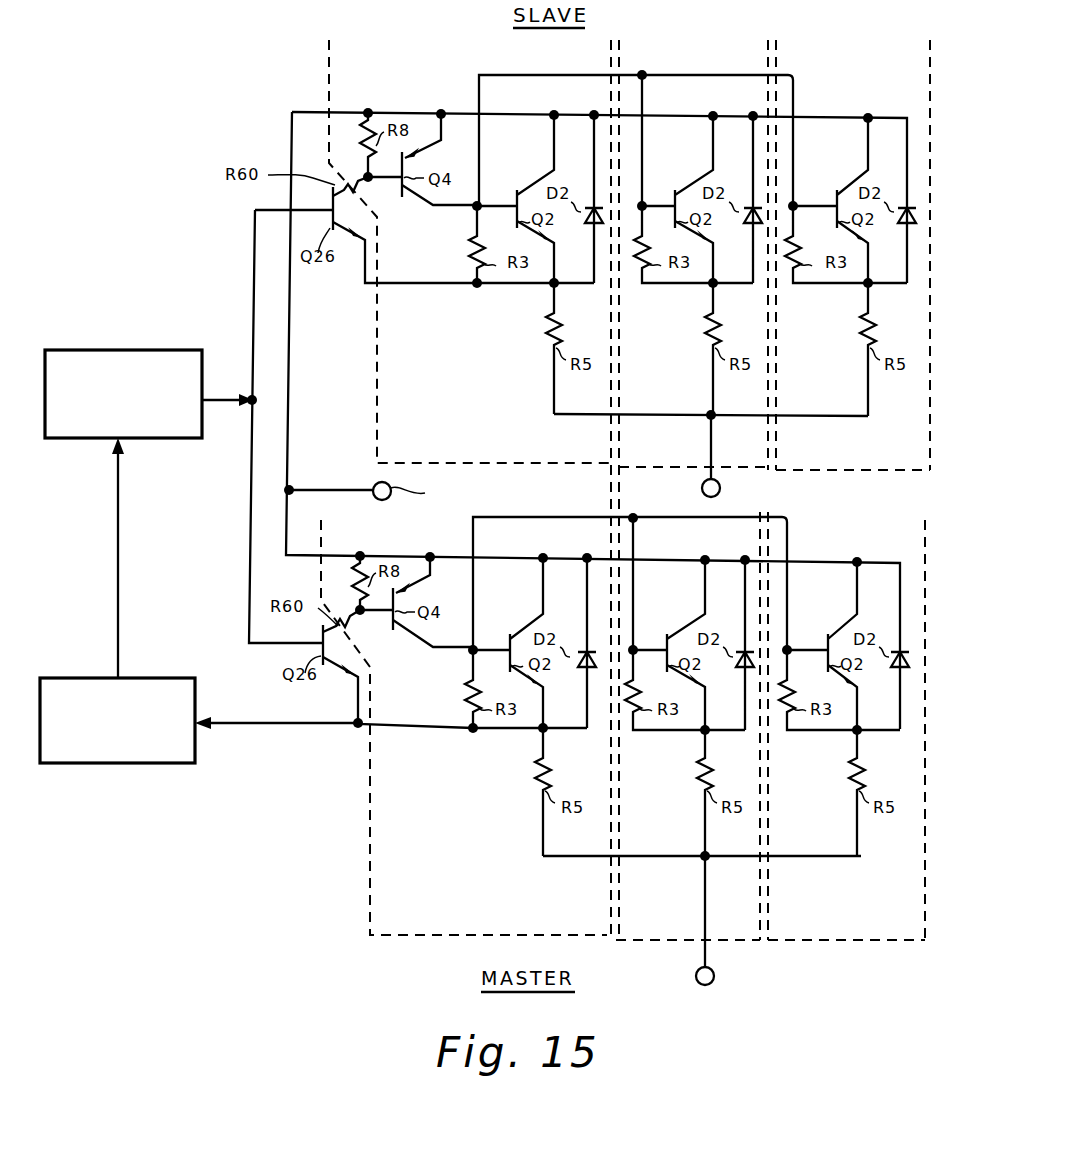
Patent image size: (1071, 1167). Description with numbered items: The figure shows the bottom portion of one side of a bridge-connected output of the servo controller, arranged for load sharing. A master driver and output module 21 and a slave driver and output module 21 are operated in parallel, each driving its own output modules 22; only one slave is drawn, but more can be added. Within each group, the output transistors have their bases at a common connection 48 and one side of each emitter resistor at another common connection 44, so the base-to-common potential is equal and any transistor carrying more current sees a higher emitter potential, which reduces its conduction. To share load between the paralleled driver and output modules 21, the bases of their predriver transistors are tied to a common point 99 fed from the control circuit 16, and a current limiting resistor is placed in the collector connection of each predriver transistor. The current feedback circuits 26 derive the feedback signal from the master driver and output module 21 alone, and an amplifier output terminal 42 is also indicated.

The control circuit 16 is at (88, 440).
The current feedback circuits 26 is at (200, 745).
The common point 99 is at (249, 403).
The amplifier output terminal 42 is at (390, 499).
The common connection 44 is at (720, 488).
The common connection 48 is at (677, 75).
The driver and output module 21 is at (376, 458).
The output modules 22 is at (682, 466).